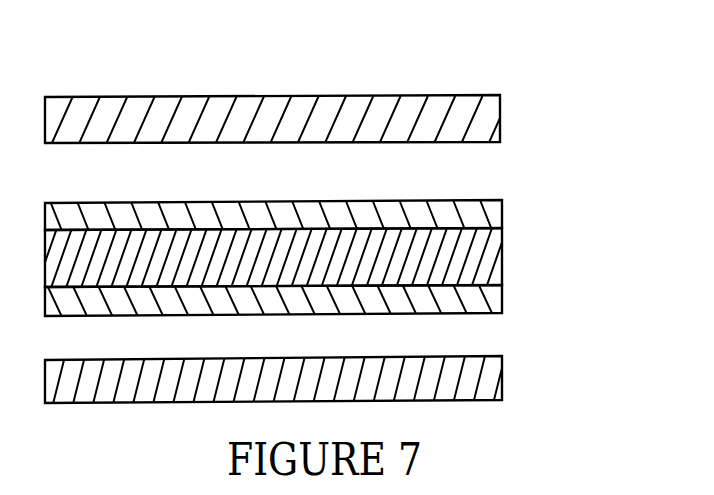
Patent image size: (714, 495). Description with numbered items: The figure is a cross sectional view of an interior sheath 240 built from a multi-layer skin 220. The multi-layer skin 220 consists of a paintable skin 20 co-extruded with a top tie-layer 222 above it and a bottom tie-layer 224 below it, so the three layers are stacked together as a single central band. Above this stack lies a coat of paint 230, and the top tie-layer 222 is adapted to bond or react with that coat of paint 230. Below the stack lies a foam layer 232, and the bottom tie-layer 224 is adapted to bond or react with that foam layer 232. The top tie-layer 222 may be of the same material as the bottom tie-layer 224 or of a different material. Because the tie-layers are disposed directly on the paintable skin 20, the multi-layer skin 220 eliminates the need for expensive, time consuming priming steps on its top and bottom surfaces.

The interior sheath 240 is at (368, 214).
The coat of paint 230 is at (500, 118).
The multi-layer skin 220 is at (368, 252).
The top tie-layer 222 is at (502, 218).
The paintable skin 20 is at (502, 262).
The bottom tie-layer 224 is at (310, 305).
The foam layer 232 is at (502, 380).